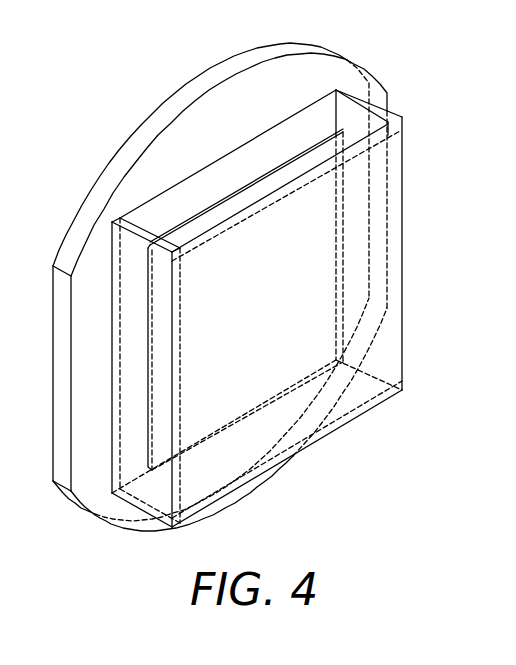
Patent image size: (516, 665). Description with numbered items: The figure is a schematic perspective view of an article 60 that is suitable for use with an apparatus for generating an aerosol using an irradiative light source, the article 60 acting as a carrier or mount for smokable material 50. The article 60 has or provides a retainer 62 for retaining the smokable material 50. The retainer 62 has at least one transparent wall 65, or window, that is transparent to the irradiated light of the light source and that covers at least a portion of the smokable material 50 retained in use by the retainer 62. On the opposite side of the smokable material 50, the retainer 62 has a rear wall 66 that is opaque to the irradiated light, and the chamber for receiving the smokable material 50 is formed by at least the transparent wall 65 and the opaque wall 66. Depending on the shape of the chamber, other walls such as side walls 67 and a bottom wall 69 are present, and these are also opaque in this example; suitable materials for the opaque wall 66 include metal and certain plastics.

The smokable material 50 is at (228, 206).
The article 60 is at (211, 268).
The retainer 62 is at (279, 319).
The transparent wall 65 is at (331, 62).
The opaque wall 66 is at (398, 267).
The side walls 67 is at (138, 486).
The bottom wall 69 is at (335, 428).